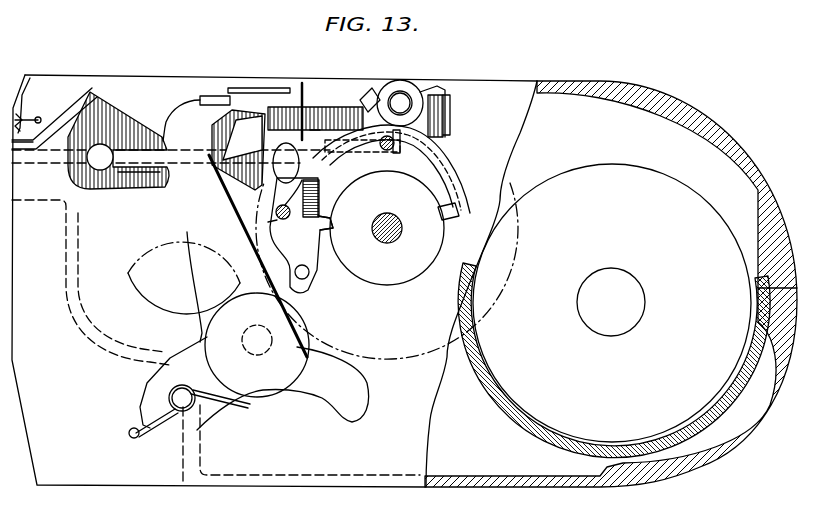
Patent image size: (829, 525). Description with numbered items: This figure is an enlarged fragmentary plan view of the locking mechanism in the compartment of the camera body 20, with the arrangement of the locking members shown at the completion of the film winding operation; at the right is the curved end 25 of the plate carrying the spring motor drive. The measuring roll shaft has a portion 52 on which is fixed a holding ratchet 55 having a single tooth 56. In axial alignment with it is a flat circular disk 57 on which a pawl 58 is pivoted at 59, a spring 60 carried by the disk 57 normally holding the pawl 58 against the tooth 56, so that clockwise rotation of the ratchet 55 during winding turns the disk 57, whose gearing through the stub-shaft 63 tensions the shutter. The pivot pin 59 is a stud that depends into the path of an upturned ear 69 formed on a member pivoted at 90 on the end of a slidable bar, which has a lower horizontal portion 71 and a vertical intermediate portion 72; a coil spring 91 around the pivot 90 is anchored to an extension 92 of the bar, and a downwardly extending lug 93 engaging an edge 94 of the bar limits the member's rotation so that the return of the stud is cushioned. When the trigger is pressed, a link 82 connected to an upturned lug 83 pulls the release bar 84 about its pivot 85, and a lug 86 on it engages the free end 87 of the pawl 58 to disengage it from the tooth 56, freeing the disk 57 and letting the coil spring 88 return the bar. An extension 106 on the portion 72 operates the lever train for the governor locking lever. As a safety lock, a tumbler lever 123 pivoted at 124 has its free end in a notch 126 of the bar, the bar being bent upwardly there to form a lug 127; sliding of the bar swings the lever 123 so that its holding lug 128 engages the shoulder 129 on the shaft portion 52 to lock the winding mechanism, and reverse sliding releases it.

The body portion 20 is at (585, 487).
The curved end of plate 25 is at (660, 98).
The portion of shaft 52 is at (402, 243).
The holding ratchet 55 is at (397, 285).
The tooth 56 is at (440, 208).
The flat circular disk 57 is at (410, 355).
The pawl 58 is at (455, 185).
The pivot pin 59 is at (353, 108).
The spring 60 is at (278, 211).
The stub-shaft 63 is at (263, 390).
The upturned ear 69 is at (412, 147).
The lower horizontal portion 71 is at (133, 188).
The vertical intermediate portion 72 is at (73, 107).
The link 82 is at (285, 88).
The upturned lug 83 is at (200, 98).
The release bar 84 is at (207, 318).
The pivot 85 is at (180, 412).
The lug 86 is at (243, 110).
The free end of pawl 87 is at (302, 83).
The coil spring 88 is at (38, 67).
The pivot 90 is at (423, 97).
The coil spring 91 is at (405, 103).
The extension 92 is at (450, 103).
The downwardly extending lug 93 is at (370, 90).
The edge 94 is at (372, 100).
The extension 106 is at (30, 143).
The tumbler lever 123 is at (293, 248).
The pivot 124 is at (303, 279).
The notch 126 is at (318, 147).
The lug 127 is at (315, 124).
The holding lug 128 is at (268, 222).
The shoulder 129 is at (328, 238).